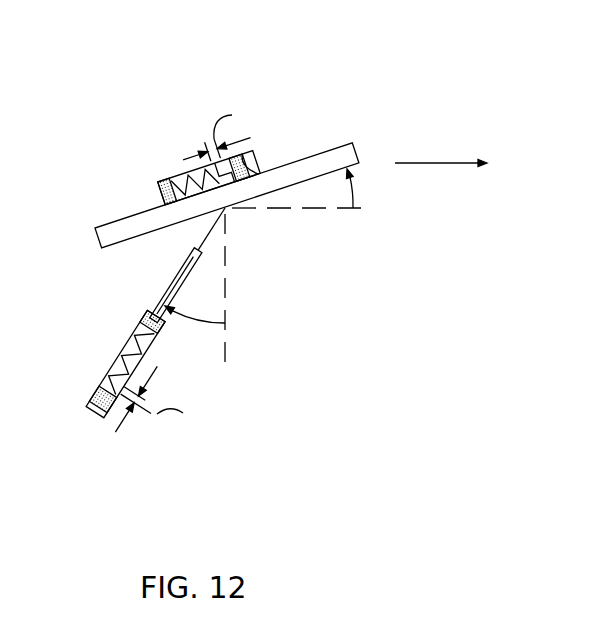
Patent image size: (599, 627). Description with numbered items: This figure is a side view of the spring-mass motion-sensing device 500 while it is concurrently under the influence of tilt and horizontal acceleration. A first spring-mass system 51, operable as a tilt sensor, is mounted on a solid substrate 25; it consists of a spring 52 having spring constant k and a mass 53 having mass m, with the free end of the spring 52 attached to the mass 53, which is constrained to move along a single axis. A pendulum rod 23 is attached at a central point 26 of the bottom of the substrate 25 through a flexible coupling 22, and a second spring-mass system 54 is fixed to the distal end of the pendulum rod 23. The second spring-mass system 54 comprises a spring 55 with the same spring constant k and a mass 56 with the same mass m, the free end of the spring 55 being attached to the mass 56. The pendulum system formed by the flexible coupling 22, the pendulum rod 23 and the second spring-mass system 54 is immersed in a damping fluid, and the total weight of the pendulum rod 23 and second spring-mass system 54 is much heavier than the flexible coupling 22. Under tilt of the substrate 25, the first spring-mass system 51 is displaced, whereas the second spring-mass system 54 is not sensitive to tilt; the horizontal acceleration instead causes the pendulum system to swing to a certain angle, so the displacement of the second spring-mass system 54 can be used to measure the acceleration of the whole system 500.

The motion-sensing device 500 is at (209, 70).
The substrate 25 is at (318, 161).
The first spring-mass system 51 is at (163, 185).
The spring 52 is at (163, 194).
The mass 53 is at (263, 144).
The flexible coupling 22 is at (222, 211).
The pendulum rod 23 is at (172, 282).
The central point 26 is at (240, 215).
The second spring-mass system 54 is at (124, 338).
The spring 55 is at (108, 366).
The mass 56 is at (90, 402).